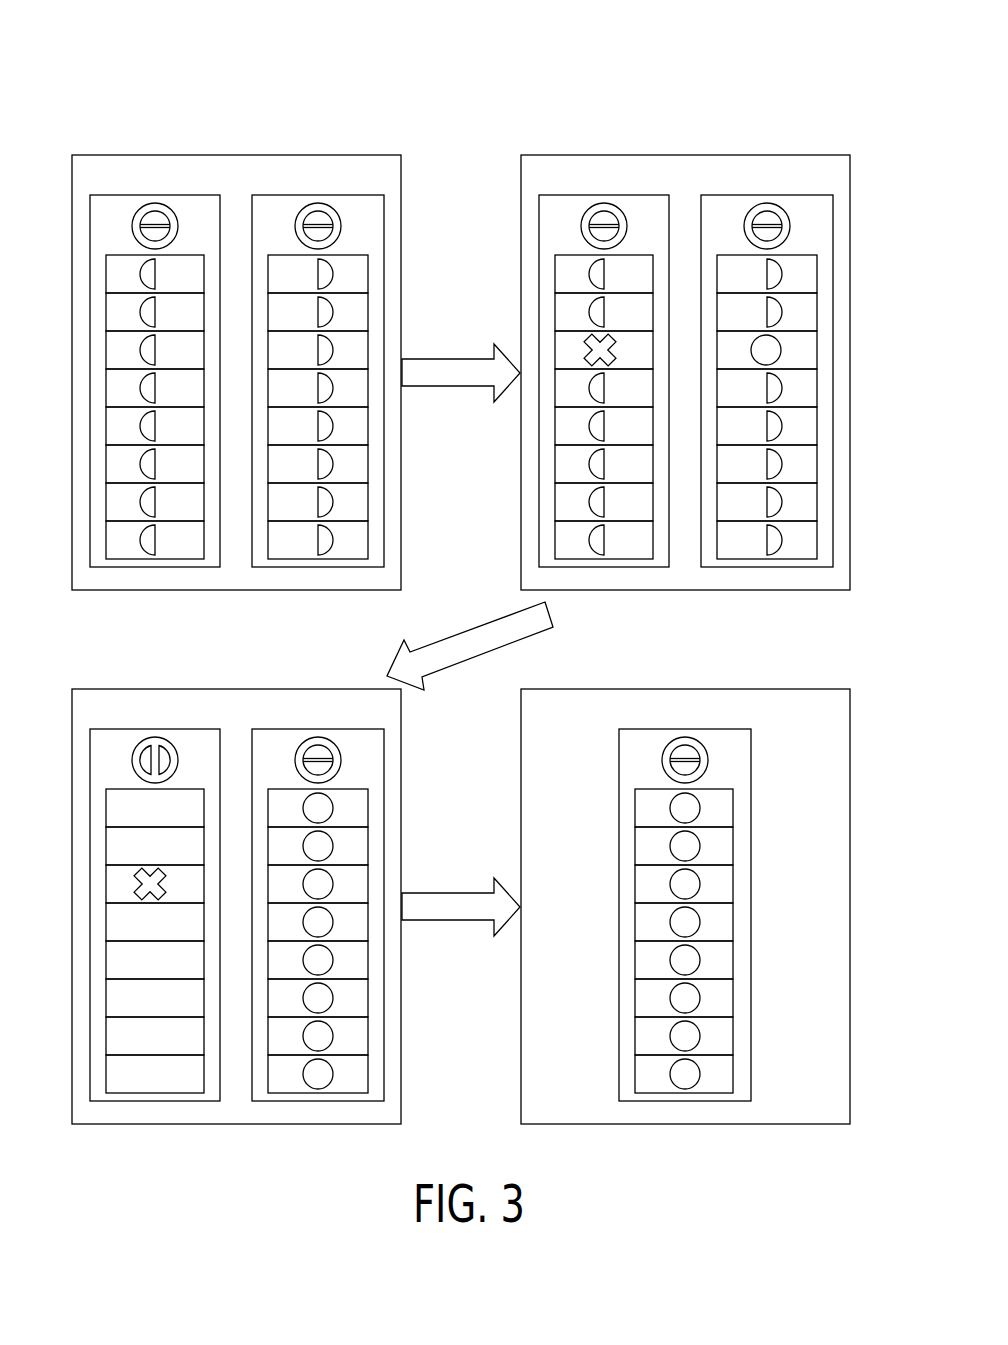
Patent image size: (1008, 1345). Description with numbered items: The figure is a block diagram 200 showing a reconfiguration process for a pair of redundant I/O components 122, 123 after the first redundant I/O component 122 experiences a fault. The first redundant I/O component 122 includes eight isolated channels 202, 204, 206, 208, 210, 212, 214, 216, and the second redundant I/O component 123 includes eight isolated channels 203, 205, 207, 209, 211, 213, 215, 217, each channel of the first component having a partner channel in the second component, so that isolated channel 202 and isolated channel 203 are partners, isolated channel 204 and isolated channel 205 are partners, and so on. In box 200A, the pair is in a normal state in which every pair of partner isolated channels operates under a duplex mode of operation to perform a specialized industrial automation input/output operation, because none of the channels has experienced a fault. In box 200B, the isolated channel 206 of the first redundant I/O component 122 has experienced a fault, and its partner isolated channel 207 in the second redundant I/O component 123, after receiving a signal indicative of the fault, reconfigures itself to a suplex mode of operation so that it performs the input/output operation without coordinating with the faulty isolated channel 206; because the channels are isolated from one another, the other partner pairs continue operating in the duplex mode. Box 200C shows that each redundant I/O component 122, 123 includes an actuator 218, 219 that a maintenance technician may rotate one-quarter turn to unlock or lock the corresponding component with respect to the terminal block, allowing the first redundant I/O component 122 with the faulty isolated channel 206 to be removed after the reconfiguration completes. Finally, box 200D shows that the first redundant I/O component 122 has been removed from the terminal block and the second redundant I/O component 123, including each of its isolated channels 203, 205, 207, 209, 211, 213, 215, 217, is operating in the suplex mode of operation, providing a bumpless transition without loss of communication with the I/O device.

The block diagram 200 is at (86, 109).
The box 200A is at (237, 148).
The box 200B is at (686, 148).
The box 200C is at (237, 682).
The box 200D is at (688, 682).
The first redundant I/O component 122 is at (155, 195).
The second redundant I/O component 123 is at (319, 195).
The isolated channel 202 is at (127, 274).
The isolated channel 203 is at (353, 271).
The isolated channel 204 is at (127, 312).
The isolated channel 205 is at (353, 309).
The isolated channel 206 is at (127, 350).
The isolated channel 207 is at (353, 347).
The isolated channel 208 is at (127, 388).
The isolated channel 209 is at (353, 391).
The isolated channel 210 is at (127, 426).
The isolated channel 211 is at (353, 429).
The isolated channel 212 is at (127, 464).
The isolated channel 213 is at (353, 467).
The isolated channel 214 is at (127, 502).
The isolated channel 215 is at (353, 505).
The isolated channel 216 is at (127, 540).
The isolated channel 217 is at (353, 543).
The actuator 218 is at (134, 759).
The actuator 219 is at (341, 757).